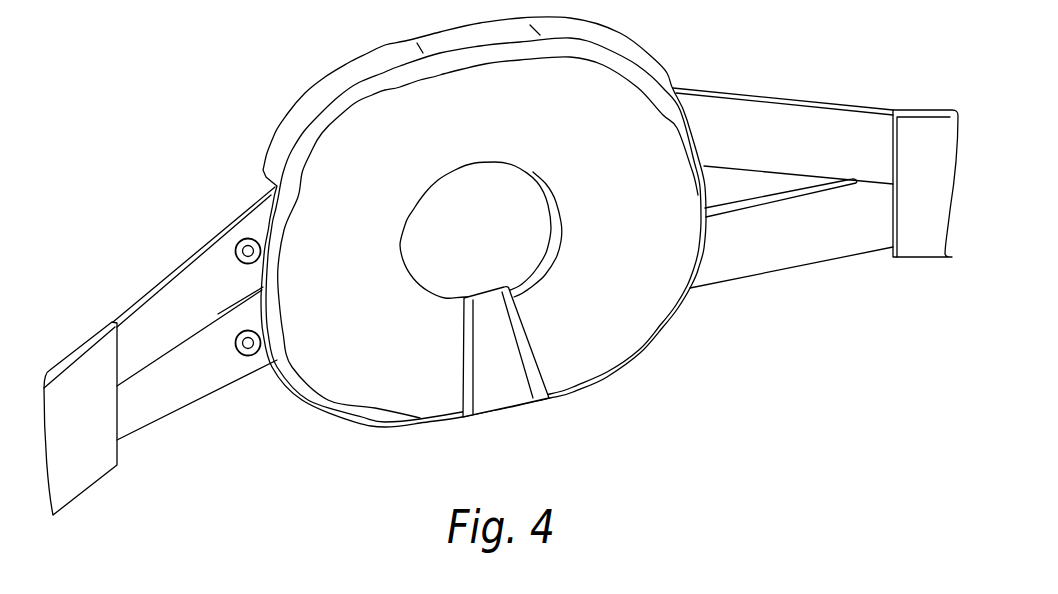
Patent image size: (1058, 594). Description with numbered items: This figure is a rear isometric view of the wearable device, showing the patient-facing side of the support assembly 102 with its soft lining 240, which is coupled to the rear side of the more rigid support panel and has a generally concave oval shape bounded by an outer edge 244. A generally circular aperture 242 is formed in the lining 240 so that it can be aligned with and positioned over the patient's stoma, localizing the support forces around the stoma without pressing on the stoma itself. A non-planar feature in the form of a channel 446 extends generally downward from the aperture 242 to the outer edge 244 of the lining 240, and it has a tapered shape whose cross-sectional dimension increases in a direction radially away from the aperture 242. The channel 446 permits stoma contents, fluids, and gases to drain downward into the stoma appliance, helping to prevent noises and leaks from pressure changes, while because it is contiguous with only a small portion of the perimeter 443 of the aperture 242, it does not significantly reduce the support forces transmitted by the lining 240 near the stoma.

The support assembly 102 is at (228, 100).
The lining 240 is at (653, 313).
The outer edge 244 is at (627, 72).
The aperture 242 is at (512, 254).
The perimeter of the aperture 443 is at (548, 238).
The channel 446 is at (508, 392).